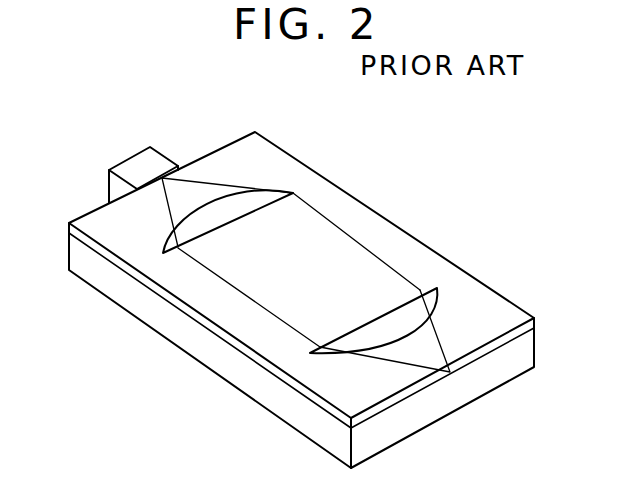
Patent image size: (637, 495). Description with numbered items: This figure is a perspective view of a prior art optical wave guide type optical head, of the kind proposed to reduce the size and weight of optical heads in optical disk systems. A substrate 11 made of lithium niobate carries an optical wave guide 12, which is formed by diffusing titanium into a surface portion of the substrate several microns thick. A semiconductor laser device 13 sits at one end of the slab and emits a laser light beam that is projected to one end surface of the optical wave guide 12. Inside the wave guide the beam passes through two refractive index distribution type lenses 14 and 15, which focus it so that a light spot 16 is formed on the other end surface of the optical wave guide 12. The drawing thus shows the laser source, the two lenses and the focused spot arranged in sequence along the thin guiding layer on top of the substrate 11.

The substrate 11 is at (257, 383).
The optical wave guide 12 is at (175, 303).
The semiconductor laser device 13 is at (132, 162).
The refractive index distribution type lens 14 is at (278, 187).
The refractive index distribution type lens 15 is at (432, 288).
The light spot 16 is at (450, 372).